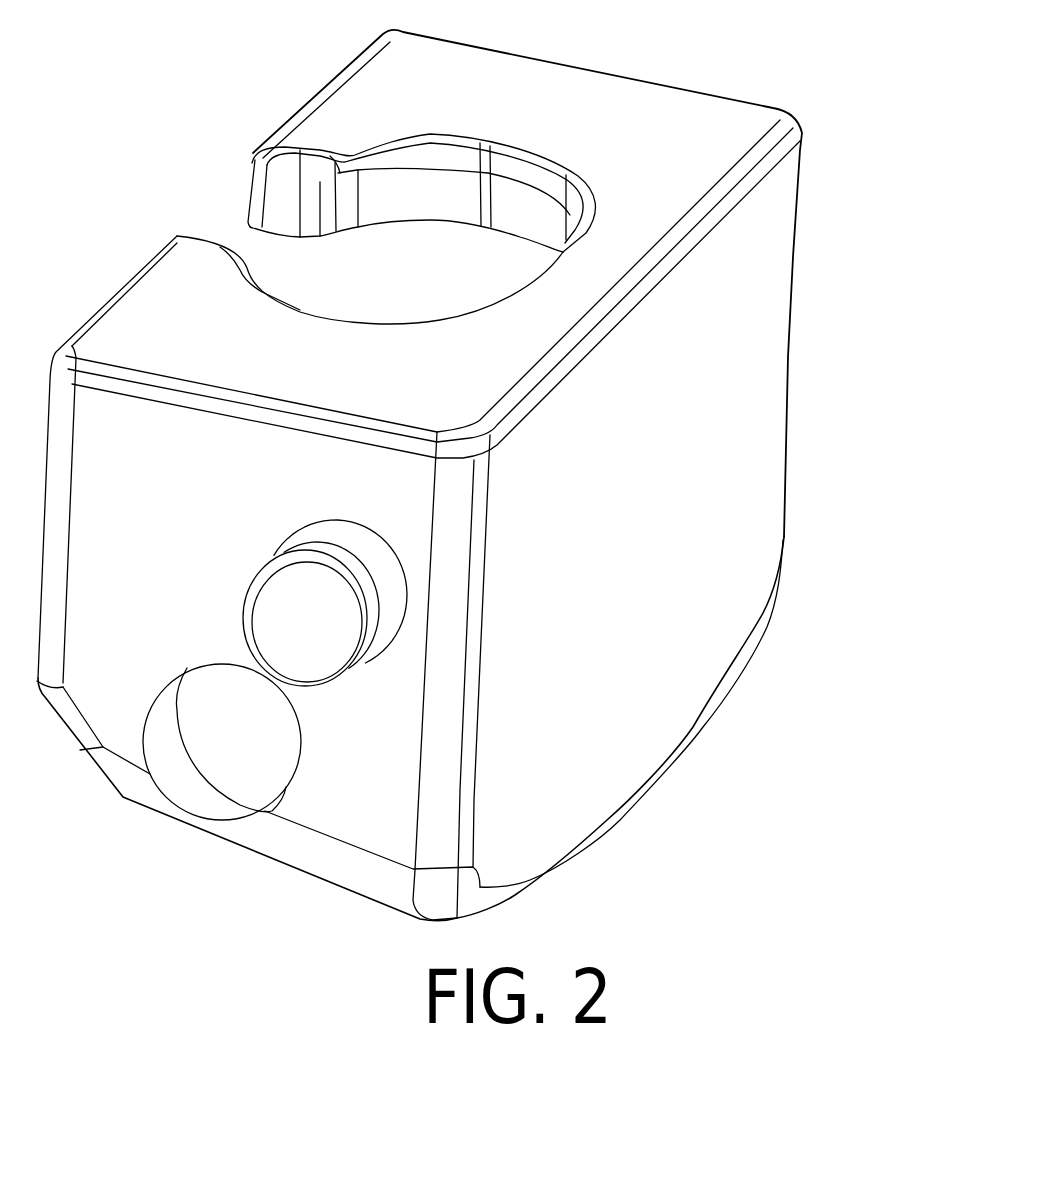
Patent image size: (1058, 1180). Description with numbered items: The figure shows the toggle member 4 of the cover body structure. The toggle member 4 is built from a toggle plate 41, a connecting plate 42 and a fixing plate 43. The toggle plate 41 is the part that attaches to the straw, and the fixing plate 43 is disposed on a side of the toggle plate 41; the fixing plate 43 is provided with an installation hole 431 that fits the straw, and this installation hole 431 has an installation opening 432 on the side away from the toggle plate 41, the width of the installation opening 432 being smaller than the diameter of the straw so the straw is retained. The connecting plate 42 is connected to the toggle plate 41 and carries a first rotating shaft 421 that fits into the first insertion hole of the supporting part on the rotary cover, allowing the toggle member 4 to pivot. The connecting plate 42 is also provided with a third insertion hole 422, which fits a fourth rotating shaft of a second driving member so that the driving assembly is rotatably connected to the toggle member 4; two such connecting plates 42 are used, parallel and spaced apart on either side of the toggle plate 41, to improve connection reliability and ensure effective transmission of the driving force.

The toggle member 4 is at (935, 383).
The toggle plate 41 is at (652, 538).
The connecting plate 42 is at (370, 782).
The first rotating shaft 421 is at (316, 625).
The third insertion hole 422 is at (236, 732).
The fixing plate 43 is at (473, 357).
The installation hole 431 is at (425, 247).
The installation opening 432 is at (248, 230).